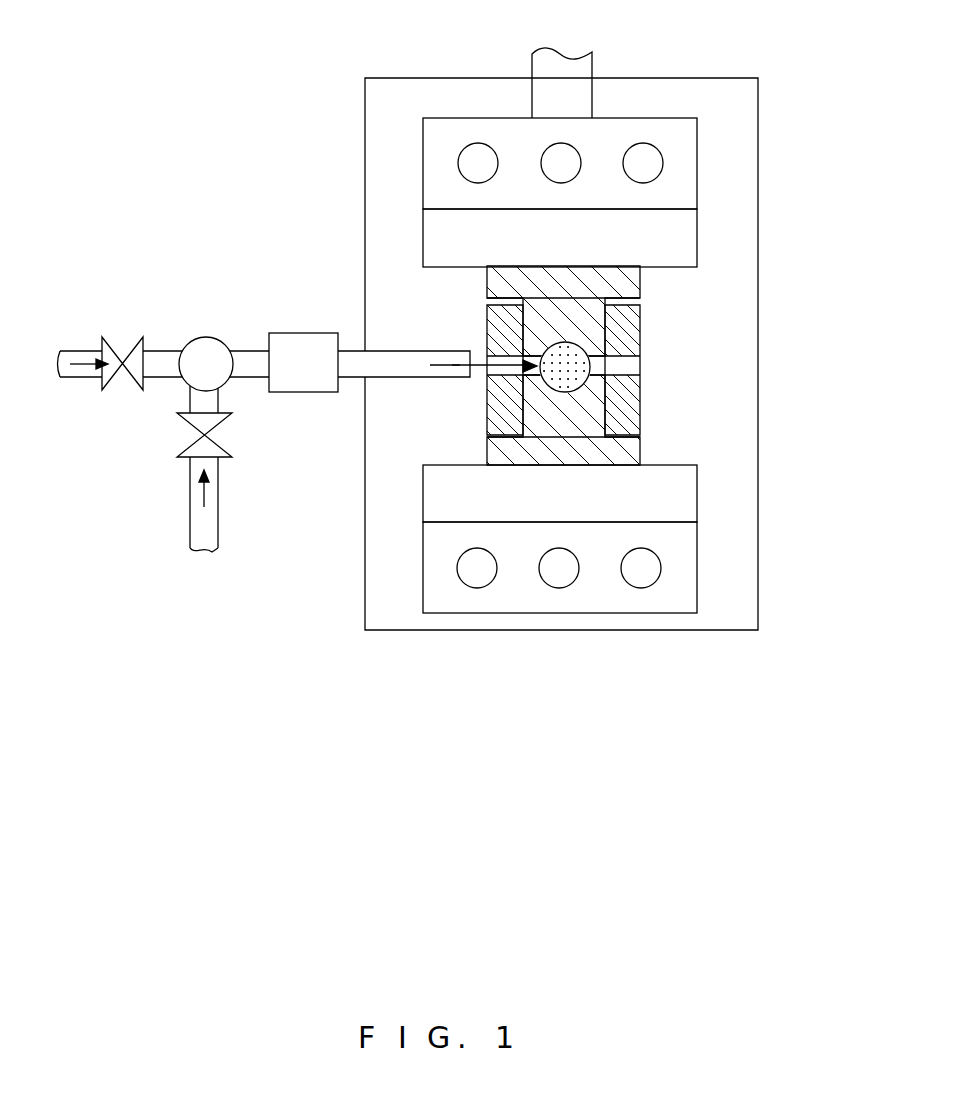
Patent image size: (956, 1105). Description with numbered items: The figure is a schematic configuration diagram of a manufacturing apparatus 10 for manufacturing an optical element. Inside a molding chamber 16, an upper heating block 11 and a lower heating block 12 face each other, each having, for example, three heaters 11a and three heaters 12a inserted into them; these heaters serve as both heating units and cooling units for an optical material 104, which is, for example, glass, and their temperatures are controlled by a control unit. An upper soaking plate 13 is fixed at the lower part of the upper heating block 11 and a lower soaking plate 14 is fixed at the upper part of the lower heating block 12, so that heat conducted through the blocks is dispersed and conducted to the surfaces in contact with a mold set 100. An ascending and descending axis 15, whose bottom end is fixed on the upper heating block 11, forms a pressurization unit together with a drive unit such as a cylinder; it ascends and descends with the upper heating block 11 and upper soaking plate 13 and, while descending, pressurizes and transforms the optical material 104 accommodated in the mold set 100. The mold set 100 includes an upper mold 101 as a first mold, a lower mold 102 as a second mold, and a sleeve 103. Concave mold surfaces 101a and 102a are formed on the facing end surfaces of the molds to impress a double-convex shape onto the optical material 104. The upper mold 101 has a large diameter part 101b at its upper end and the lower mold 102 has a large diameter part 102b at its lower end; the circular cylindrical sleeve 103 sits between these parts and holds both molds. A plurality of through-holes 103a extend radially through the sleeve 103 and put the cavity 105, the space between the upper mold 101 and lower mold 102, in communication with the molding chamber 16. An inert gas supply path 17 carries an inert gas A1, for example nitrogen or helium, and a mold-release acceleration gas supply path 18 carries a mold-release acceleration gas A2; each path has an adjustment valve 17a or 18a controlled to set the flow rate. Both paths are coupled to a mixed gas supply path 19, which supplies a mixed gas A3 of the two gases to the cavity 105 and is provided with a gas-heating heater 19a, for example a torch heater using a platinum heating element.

The manufacturing apparatus 10 is at (253, 105).
The upper heating block 11 is at (697, 158).
The heaters 11a is at (647, 150).
The lower heating block 12 is at (697, 568).
The heaters 12a is at (593, 678).
The upper soaking plate 13 is at (697, 238).
The lower soaking plate 14 is at (697, 495).
The ascending and descending axis 15 is at (580, 82).
The molding chamber 16 is at (365, 203).
The inert gas supply path 17 is at (153, 350).
The adjustment valve 17a is at (122, 340).
The mold-release acceleration gas supply path 18 is at (187, 523).
The adjustment valve 18a is at (178, 433).
The mixed gas supply path 19 is at (347, 350).
The gas-heating heater 19a is at (303, 345).
The mold set 100 is at (737, 374).
The upper mold 101 is at (488, 282).
The concave mold surface 101a is at (590, 352).
The large diameter part 101b is at (627, 282).
The lower mold 102 is at (488, 443).
The concave mold surface 102a is at (592, 383).
The large diameter part 102b is at (627, 448).
The sleeve 103 is at (642, 322).
The through-holes 103a is at (625, 372).
The optical material 104 is at (513, 332).
The cavity 105 is at (597, 365).
The inert gas A1 is at (85, 352).
The mold-release acceleration gas A2 is at (204, 495).
The mixed gas A3 is at (452, 365).